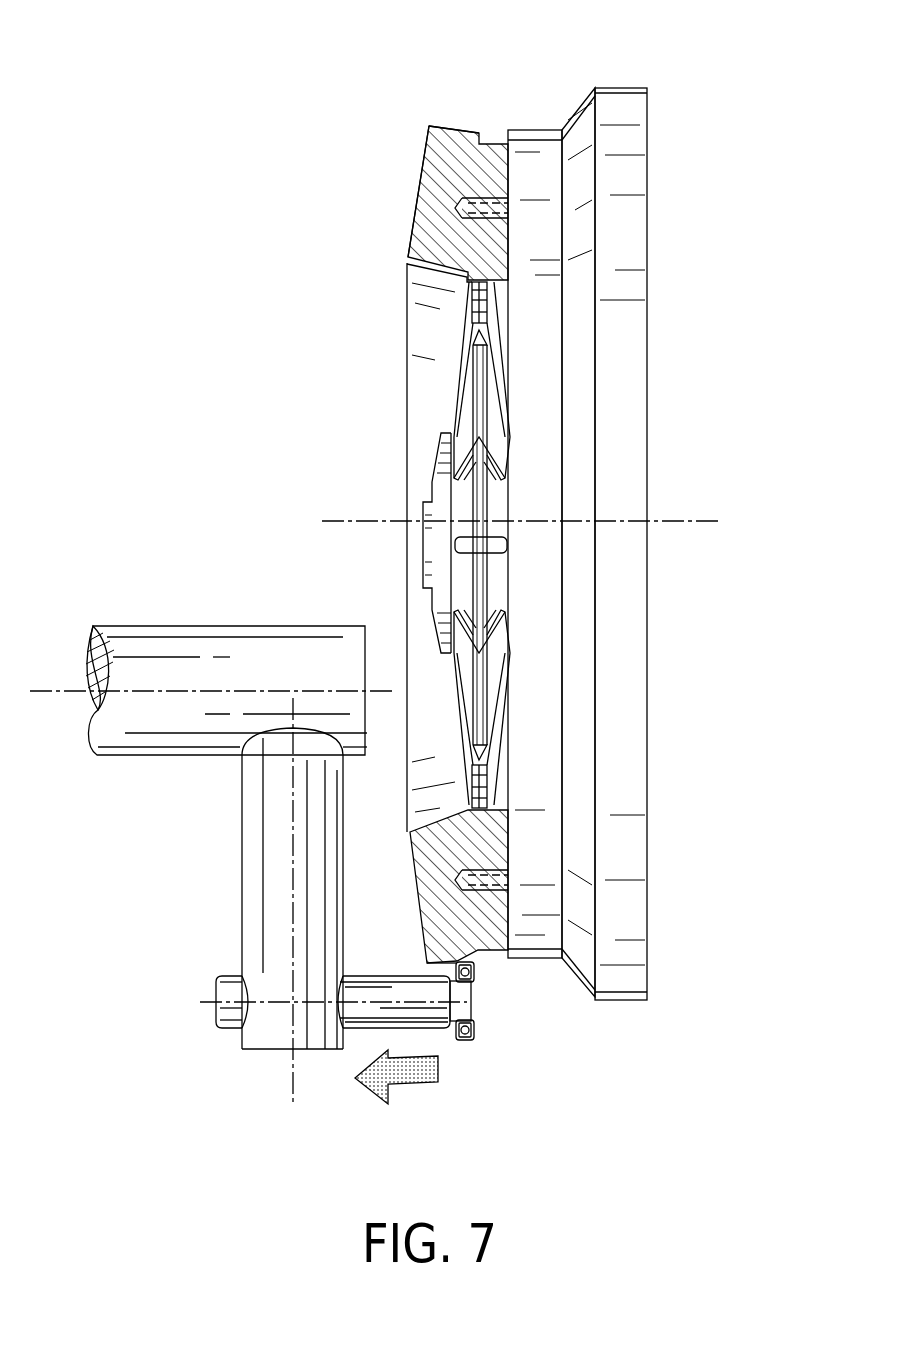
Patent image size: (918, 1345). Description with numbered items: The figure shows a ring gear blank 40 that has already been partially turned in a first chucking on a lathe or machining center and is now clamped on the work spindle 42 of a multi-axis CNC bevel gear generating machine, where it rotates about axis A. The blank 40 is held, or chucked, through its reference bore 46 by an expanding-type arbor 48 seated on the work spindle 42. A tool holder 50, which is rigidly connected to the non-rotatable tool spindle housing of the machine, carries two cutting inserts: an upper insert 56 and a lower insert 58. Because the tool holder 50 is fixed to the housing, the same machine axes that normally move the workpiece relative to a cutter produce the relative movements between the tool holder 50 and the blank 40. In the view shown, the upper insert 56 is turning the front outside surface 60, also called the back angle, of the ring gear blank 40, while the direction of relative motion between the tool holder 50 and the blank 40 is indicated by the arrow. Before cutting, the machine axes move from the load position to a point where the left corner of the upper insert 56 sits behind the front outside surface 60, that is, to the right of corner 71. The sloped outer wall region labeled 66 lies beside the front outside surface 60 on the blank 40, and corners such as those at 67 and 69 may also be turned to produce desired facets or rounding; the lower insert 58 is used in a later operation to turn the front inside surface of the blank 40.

The ring gear blank 40 is at (432, 180).
The work spindle 42 is at (625, 690).
The reference bore 46 is at (503, 800).
The expanding-type arbor 48 is at (492, 300).
The tool holder 50 is at (202, 777).
The upper insert 56 is at (475, 977).
The lower insert 58 is at (467, 1040).
The front outside surface 60 is at (457, 126).
The housing sloped wall 66 is at (413, 226).
The corner 67 is at (407, 264).
The corner 69 is at (427, 962).
The corner 71 is at (480, 960).
The axis A is at (698, 520).